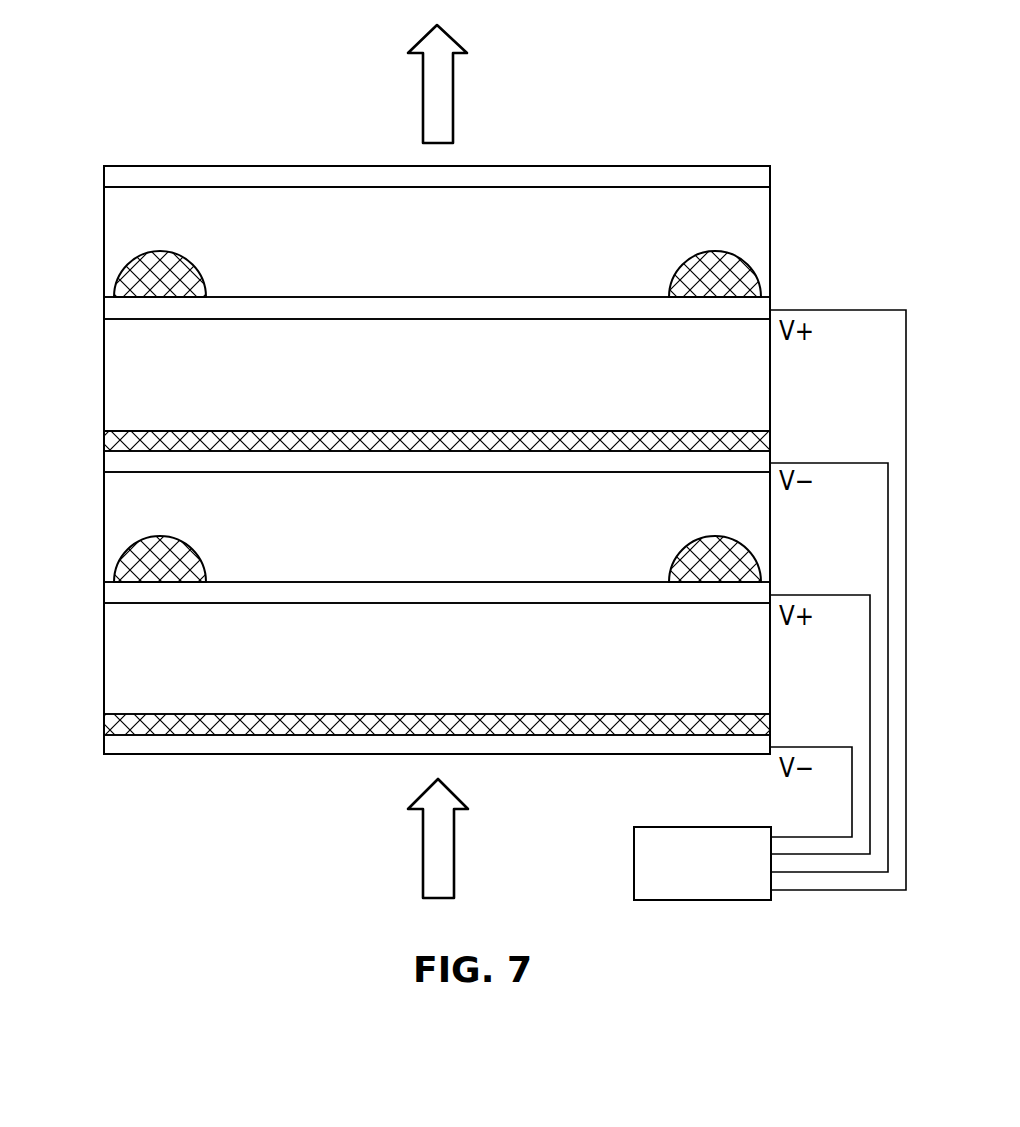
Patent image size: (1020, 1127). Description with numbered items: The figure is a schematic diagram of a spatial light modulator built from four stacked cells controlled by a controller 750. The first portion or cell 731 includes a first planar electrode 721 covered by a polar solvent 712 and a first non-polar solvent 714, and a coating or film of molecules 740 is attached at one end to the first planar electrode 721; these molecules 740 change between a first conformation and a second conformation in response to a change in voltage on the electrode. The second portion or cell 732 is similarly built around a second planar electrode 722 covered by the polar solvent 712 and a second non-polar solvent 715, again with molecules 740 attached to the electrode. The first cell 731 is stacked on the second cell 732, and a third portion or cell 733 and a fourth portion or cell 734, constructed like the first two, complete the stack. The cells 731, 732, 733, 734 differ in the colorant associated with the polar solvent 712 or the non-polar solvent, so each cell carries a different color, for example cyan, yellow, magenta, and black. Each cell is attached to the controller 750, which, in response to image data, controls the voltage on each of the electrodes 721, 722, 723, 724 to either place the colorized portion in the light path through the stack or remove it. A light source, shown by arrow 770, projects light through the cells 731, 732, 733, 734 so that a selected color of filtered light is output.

The polar solvent 712 is at (727, 218).
The first non-polar solvent 714 is at (702, 262).
The second non-polar solvent 715 is at (730, 431).
The first planar electrode 721 is at (765, 302).
The second planar electrode 722 is at (765, 454).
The third electrode 723 is at (765, 585).
The fourth electrode 724 is at (765, 738).
The first portion or cell 731 is at (127, 220).
The second portion or cell 732 is at (127, 350).
The third portion or cell 733 is at (127, 514).
The fourth portion or cell 734 is at (127, 650).
The molecules 740 is at (112, 297).
The controller 750 is at (702, 827).
The light source arrow 770 is at (454, 855).